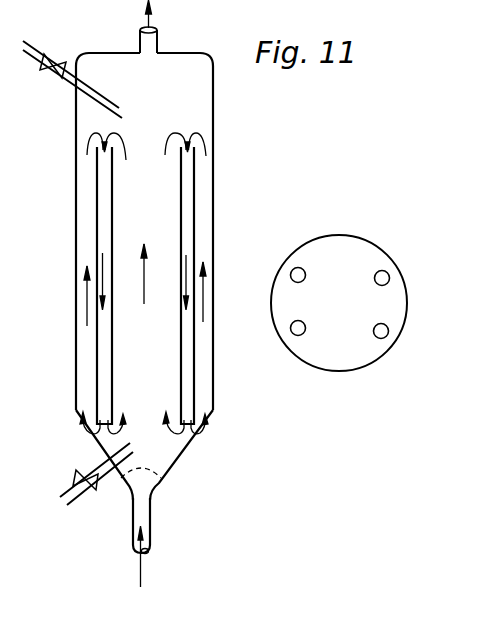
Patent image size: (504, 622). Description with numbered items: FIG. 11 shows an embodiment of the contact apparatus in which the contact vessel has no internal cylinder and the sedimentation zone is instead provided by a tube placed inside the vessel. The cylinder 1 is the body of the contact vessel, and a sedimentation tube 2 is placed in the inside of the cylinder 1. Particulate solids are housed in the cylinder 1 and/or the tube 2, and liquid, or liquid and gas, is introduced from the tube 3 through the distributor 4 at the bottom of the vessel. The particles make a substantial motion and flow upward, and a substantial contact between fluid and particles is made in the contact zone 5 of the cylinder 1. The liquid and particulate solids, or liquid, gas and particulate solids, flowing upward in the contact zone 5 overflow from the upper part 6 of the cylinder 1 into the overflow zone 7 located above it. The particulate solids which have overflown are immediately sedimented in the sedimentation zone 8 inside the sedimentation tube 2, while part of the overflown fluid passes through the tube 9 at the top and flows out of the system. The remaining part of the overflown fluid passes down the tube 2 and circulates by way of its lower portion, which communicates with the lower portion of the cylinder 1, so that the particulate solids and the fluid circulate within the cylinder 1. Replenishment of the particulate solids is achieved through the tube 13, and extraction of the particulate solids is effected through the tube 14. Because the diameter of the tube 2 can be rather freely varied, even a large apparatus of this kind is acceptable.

The cylinder 1 is at (213, 292).
The sedimentation tube 2 is at (97, 232).
The tube 3 is at (150, 522).
The distributor 4 is at (161, 474).
The contact zone 5 is at (157, 353).
The upper part 6 is at (142, 162).
The overflow zone 7 is at (152, 128).
The sedimentation zone 8 is at (188, 205).
The tube 9 is at (157, 37).
The tube 13 is at (40, 45).
The tube 14 is at (67, 505).